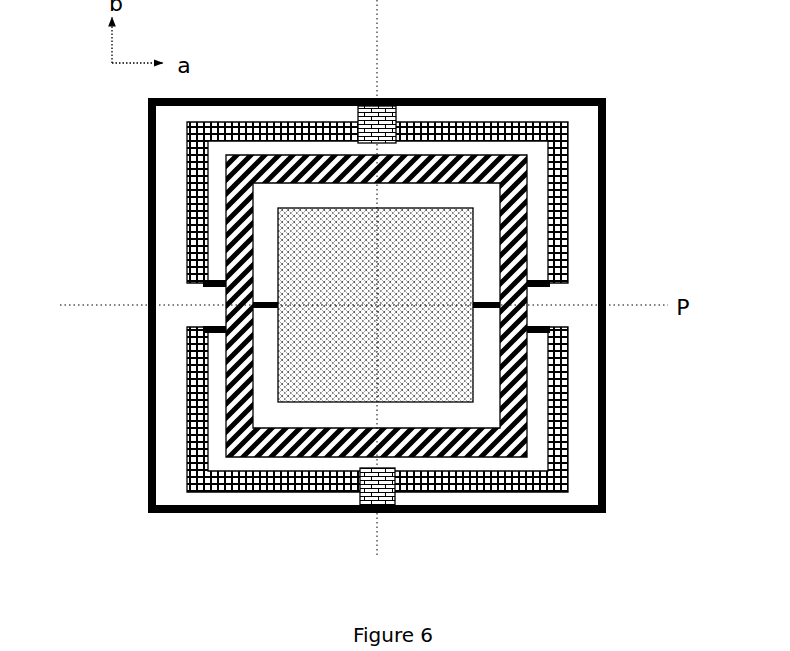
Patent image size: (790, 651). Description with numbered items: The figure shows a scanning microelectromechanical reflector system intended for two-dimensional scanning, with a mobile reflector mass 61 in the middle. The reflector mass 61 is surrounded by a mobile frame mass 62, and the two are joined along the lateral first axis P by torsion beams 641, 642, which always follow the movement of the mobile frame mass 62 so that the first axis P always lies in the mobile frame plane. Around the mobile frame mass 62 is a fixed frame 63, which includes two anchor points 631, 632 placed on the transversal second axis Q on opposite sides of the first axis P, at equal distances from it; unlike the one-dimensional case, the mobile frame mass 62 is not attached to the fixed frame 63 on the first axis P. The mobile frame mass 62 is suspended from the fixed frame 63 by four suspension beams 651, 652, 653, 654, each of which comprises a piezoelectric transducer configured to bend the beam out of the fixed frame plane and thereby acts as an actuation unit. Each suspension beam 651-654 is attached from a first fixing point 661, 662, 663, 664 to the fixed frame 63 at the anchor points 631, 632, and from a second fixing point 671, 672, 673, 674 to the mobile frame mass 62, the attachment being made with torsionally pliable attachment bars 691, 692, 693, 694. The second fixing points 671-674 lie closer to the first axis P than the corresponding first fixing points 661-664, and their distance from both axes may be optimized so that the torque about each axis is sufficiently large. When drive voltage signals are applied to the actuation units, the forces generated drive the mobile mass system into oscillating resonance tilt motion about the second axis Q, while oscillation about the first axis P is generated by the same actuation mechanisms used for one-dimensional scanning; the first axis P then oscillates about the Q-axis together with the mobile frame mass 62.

The mobile reflector mass 61 is at (390, 283).
The mobile frame mass 62 is at (512, 175).
The fixed frame 63 is at (278, 97).
The anchor point 631 is at (365, 494).
The anchor point 632 is at (378, 118).
The torsion beam 641 is at (268, 310).
The torsion beam 642 is at (485, 312).
The suspension beam 651 is at (192, 212).
The suspension beam 652 is at (187, 427).
The suspension beam 653 is at (557, 213).
The suspension beam 654 is at (560, 422).
The first fixing point 661 is at (355, 127).
The first fixing point 662 is at (355, 483).
The first fixing point 663 is at (395, 125).
The first fixing point 664 is at (397, 482).
The second fixing point 671 is at (222, 275).
The second fixing point 672 is at (222, 333).
The second fixing point 673 is at (530, 276).
The second fixing point 674 is at (530, 332).
The torsionally pliable attachment bar 691 is at (208, 288).
The torsionally pliable attachment bar 692 is at (208, 327).
The torsionally pliable attachment bar 693 is at (545, 290).
The torsionally pliable attachment bar 694 is at (545, 322).